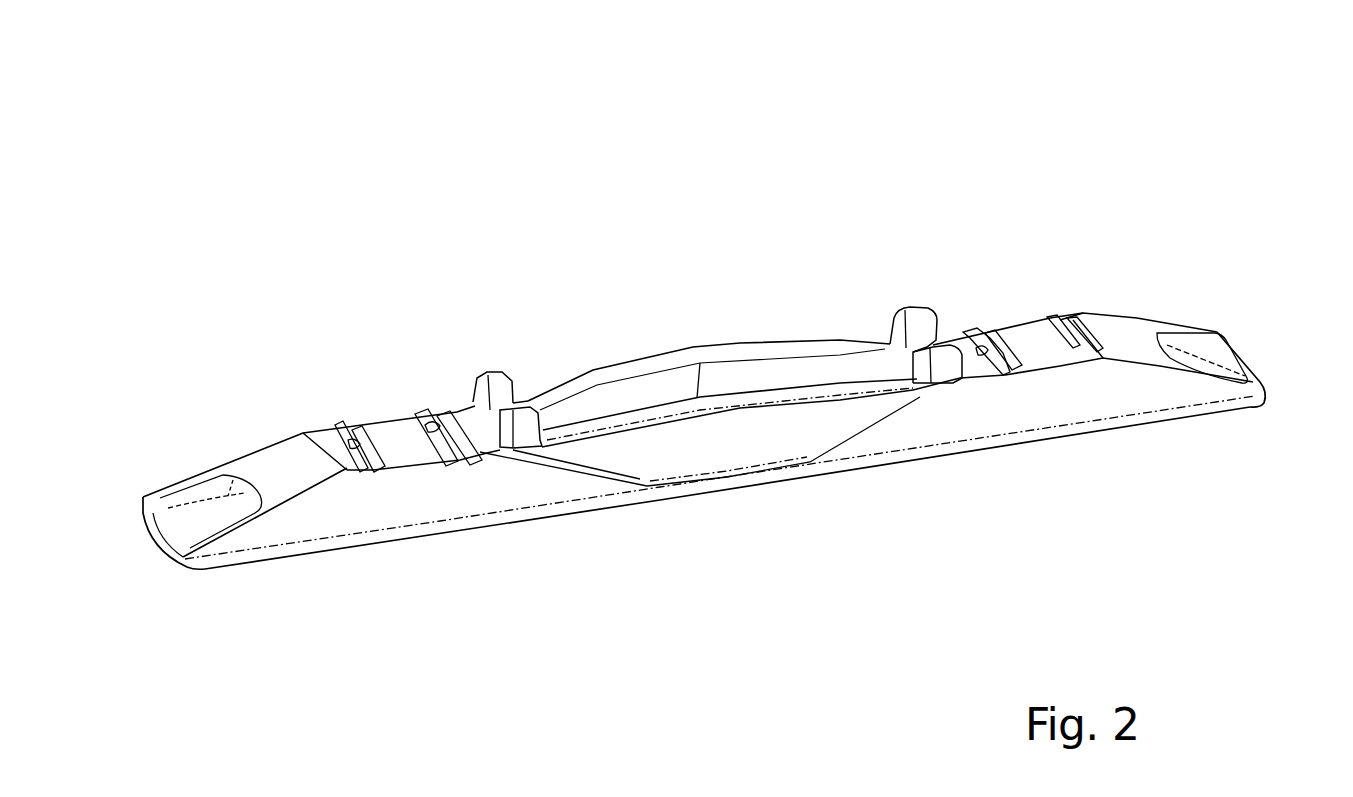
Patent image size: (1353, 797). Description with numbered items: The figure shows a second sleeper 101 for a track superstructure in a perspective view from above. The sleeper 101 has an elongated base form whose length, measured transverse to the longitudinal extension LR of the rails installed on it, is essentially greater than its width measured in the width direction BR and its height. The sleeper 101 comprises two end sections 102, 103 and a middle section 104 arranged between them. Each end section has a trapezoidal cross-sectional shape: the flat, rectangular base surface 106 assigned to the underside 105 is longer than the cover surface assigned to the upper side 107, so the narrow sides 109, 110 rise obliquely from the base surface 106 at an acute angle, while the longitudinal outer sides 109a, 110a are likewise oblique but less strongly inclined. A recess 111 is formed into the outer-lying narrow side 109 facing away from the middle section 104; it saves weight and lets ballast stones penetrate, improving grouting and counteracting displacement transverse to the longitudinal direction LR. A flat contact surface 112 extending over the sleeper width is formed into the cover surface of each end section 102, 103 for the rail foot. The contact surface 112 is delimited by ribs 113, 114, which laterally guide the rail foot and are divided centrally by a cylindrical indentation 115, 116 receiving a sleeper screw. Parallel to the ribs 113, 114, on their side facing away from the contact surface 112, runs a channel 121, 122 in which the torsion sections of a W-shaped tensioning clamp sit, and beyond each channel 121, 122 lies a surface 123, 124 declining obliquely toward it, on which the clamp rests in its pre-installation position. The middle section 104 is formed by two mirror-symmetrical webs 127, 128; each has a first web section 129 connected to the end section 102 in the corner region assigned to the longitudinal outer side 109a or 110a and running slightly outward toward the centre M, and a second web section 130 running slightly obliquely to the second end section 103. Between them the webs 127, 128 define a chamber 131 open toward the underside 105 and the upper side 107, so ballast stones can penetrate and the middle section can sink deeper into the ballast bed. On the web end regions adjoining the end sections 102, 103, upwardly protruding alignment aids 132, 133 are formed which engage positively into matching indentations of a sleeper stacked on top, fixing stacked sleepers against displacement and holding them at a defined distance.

The sleeper 101 is at (455, 190).
The end section 102 is at (197, 472).
The end section 103 is at (1137, 316).
The middle section 104 is at (806, 337).
The underside 105 is at (593, 522).
The base surface 106 is at (394, 543).
The upper side 107 is at (713, 343).
The narrow side 109 is at (298, 468).
The longitudinal outer side 109a is at (495, 493).
The narrow side 110 is at (885, 345).
The longitudinal outer side 110a is at (253, 447).
The recess 111 is at (225, 512).
The contact surface 112 is at (375, 456).
The rib 113 is at (372, 470).
The rib 114 is at (408, 415).
The cylindrical indentation 115 is at (432, 450).
The cylindrical indentation 116 is at (352, 440).
The channel 121 is at (980, 373).
The channel 122 is at (427, 417).
The obliquely declining surface 123 is at (317, 437).
The obliquely declining surface 124 is at (1093, 330).
The web 127 is at (747, 343).
The web 128 is at (683, 438).
The first web section 129 is at (578, 375).
The second web section 130 is at (826, 415).
The chamber 131 is at (720, 390).
The alignment aid 132 is at (476, 377).
The alignment aid 133 is at (523, 427).
The width direction BR is at (672, 345).
The longitudinal extension of the rails LR is at (140, 537).
The centre M is at (740, 410).